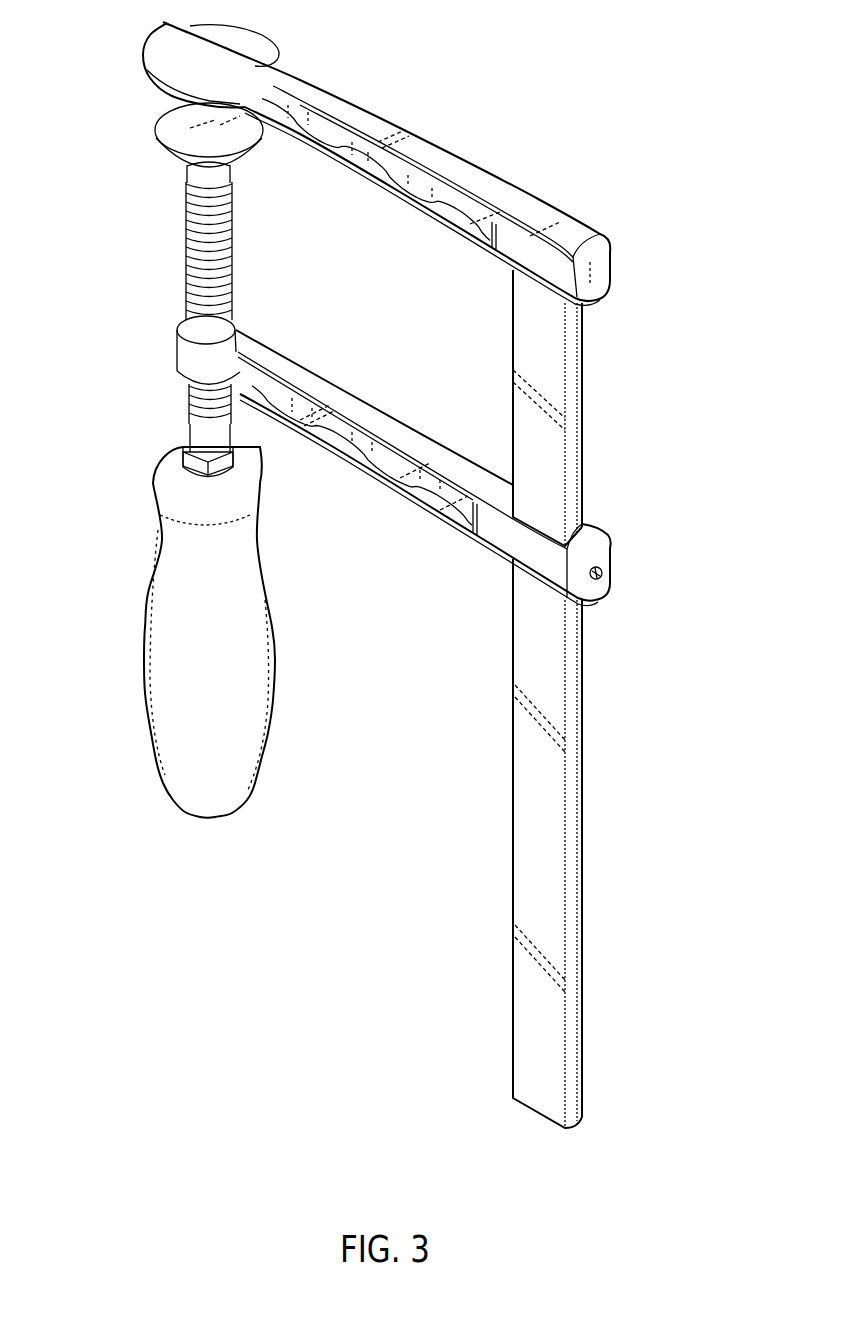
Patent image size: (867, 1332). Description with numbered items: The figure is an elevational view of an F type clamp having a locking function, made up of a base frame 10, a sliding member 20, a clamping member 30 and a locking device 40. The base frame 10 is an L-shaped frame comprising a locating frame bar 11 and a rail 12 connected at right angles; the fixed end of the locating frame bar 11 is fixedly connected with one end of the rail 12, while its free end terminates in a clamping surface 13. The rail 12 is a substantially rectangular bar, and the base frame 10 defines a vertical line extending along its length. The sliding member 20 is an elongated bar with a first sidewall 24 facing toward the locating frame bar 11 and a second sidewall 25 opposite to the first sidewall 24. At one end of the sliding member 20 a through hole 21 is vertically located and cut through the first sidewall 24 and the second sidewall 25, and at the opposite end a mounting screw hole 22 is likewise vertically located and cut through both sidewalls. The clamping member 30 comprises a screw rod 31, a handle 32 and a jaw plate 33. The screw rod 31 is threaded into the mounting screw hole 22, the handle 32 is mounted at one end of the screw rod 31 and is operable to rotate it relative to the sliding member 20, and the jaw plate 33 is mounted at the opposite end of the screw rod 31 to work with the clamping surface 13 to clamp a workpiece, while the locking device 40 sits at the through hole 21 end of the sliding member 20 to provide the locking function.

The base frame 10 is at (661, 178).
The locating frame bar 11 is at (592, 237).
The rail 12 is at (567, 344).
The clamping surface 13 is at (150, 72).
The sliding member 20 is at (347, 463).
The through hole 21 is at (607, 540).
The mounting screw hole 22 is at (240, 318).
The first sidewall 24 is at (417, 440).
The second sidewall 25 is at (400, 505).
The clamping member 30 is at (96, 186).
The screw rod 31 is at (193, 278).
The handle 32 is at (172, 467).
The jaw plate 33 is at (178, 142).
The locking device 40 is at (605, 572).